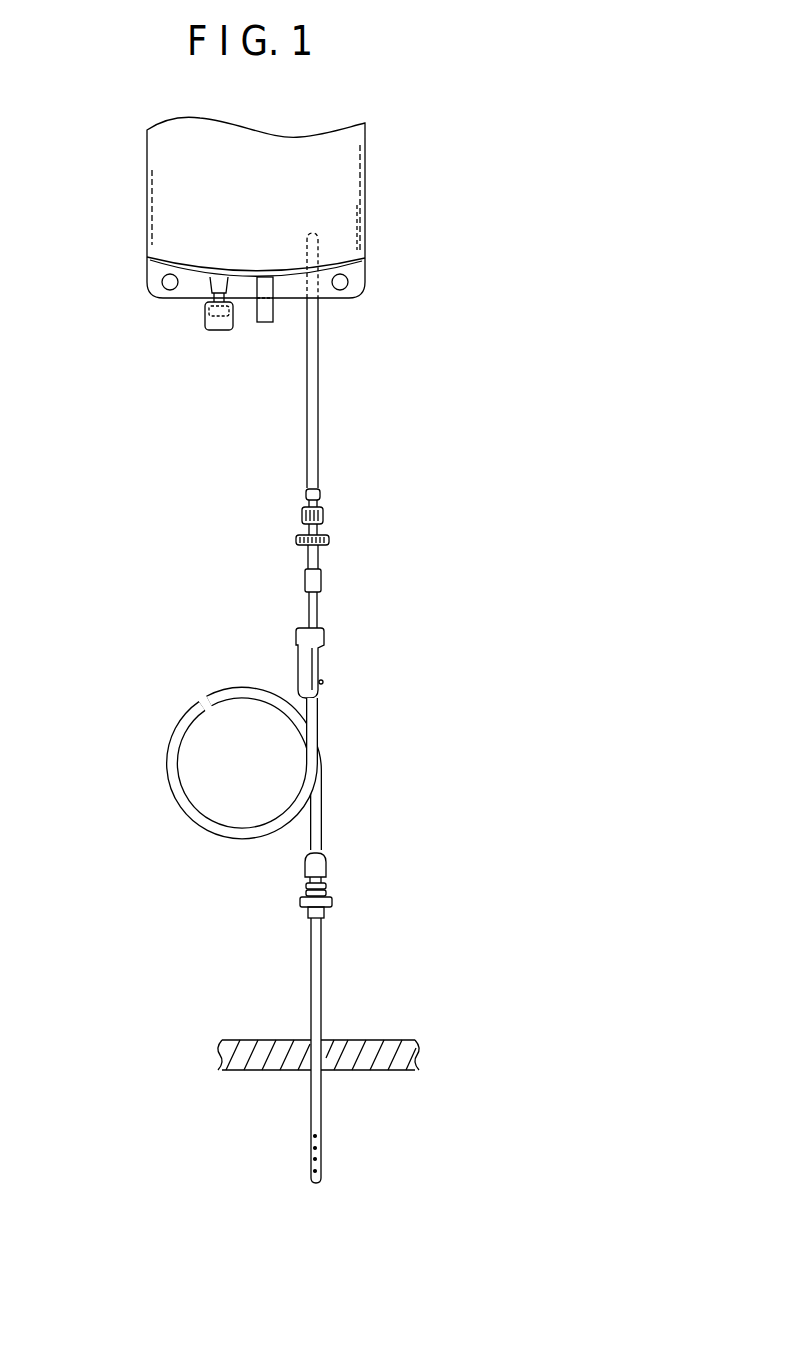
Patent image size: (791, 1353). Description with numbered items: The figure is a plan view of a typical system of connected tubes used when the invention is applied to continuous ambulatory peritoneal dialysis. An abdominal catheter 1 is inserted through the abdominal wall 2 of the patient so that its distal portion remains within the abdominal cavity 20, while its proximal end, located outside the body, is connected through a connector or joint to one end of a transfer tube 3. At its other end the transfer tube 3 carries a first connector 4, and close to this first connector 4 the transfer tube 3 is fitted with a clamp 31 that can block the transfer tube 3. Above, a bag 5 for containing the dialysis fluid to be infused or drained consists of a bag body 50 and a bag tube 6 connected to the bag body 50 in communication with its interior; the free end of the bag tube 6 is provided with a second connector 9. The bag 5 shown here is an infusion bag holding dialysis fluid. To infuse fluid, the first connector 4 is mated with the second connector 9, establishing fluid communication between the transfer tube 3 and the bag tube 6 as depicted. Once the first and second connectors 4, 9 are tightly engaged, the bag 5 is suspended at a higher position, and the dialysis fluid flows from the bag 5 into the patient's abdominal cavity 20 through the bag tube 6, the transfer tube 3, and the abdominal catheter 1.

The abdominal catheter 1 is at (311, 970).
The abdominal wall 2 is at (387, 1040).
The abdominal cavity 20 is at (398, 1136).
The transfer tube 3 is at (322, 730).
The clamp 31 is at (300, 656).
The first connector 4 is at (320, 557).
The bag 5 is at (378, 172).
The bag body 50 is at (172, 190).
The bag tube 6 is at (318, 370).
The second connector 9 is at (324, 516).